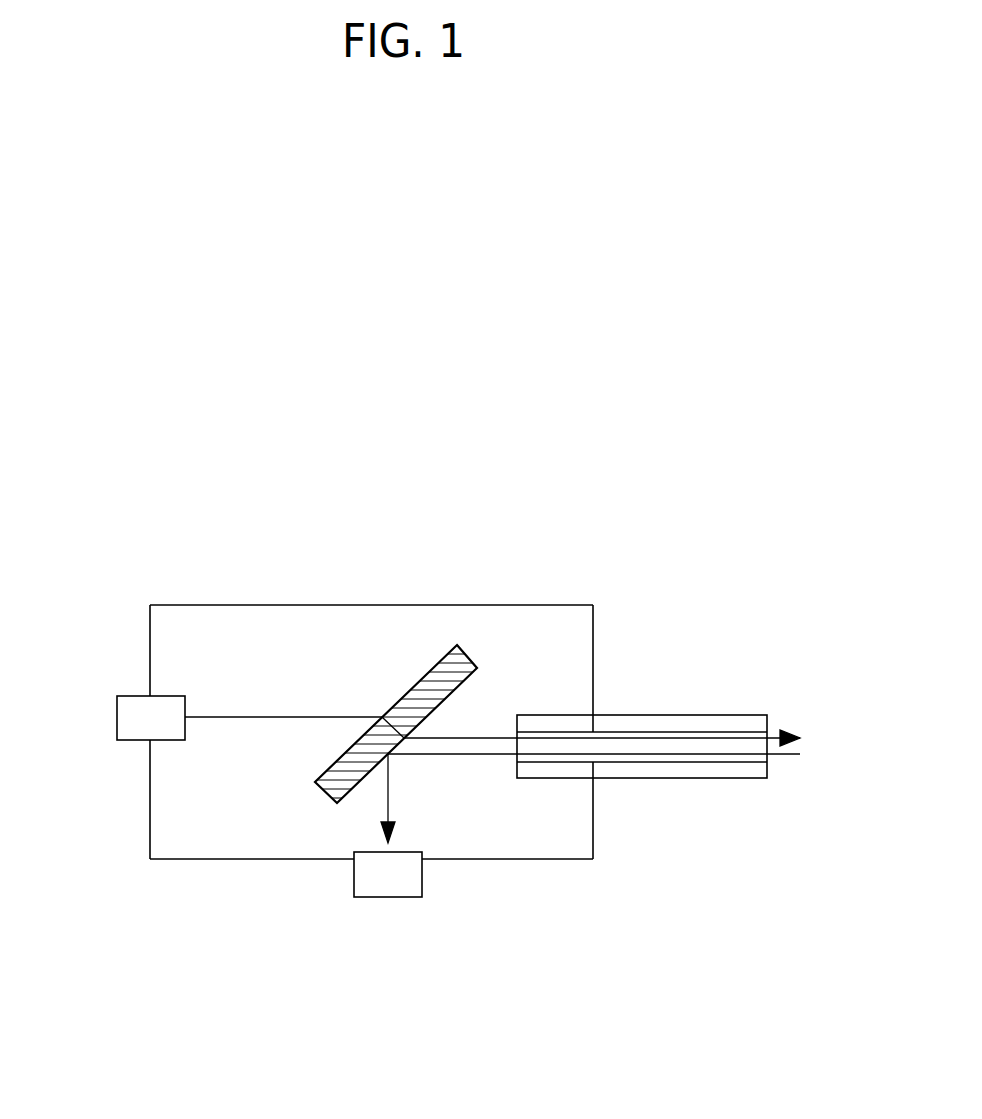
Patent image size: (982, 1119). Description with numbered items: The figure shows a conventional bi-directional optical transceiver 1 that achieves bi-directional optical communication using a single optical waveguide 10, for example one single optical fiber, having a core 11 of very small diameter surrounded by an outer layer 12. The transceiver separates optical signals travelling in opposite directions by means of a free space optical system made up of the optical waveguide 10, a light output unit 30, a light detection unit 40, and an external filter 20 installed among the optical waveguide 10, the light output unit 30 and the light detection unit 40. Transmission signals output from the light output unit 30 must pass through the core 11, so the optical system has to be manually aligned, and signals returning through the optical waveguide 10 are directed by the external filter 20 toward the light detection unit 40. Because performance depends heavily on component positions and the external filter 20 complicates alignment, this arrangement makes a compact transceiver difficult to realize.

The optical module housing 1 is at (325, 605).
The optical waveguide 10 is at (642, 697).
The core 11 is at (670, 657).
The cladding 12 is at (678, 722).
The external filter 20 is at (422, 673).
The light output unit 30 is at (117, 718).
The light detection unit 40 is at (388, 898).